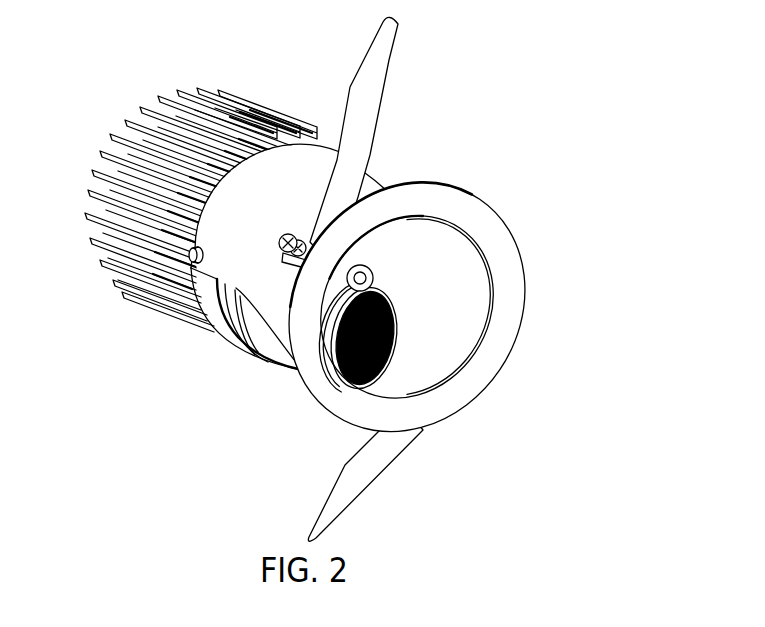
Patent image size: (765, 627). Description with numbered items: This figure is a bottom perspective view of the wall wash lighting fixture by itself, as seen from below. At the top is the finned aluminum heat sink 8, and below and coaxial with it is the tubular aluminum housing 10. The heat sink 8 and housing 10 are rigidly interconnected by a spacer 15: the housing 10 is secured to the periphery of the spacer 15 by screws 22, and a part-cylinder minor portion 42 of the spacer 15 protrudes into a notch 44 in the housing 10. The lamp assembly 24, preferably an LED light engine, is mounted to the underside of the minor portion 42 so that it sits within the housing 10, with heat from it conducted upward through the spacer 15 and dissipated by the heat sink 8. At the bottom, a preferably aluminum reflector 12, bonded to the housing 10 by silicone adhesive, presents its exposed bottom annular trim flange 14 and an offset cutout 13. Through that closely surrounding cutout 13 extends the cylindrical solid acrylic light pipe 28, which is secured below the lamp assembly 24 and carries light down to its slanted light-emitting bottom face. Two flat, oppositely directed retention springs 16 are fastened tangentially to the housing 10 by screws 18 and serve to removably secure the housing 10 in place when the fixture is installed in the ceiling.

The finned aluminum heat sink 8 is at (103, 242).
The tubular aluminum housing 10 is at (377, 186).
The reflector 12 is at (465, 258).
The offset cutout 13 is at (343, 370).
The bottom annular trim flange 14 is at (476, 378).
The spacer 15 is at (219, 336).
The retention springs 16 is at (372, 73).
The screws 18 is at (286, 242).
The screws 22 is at (200, 245).
The lamp assembly 24 is at (233, 341).
The light pipe 28 is at (390, 328).
The part-cylinder minor portion 42 is at (203, 313).
The notch 44 is at (217, 281).